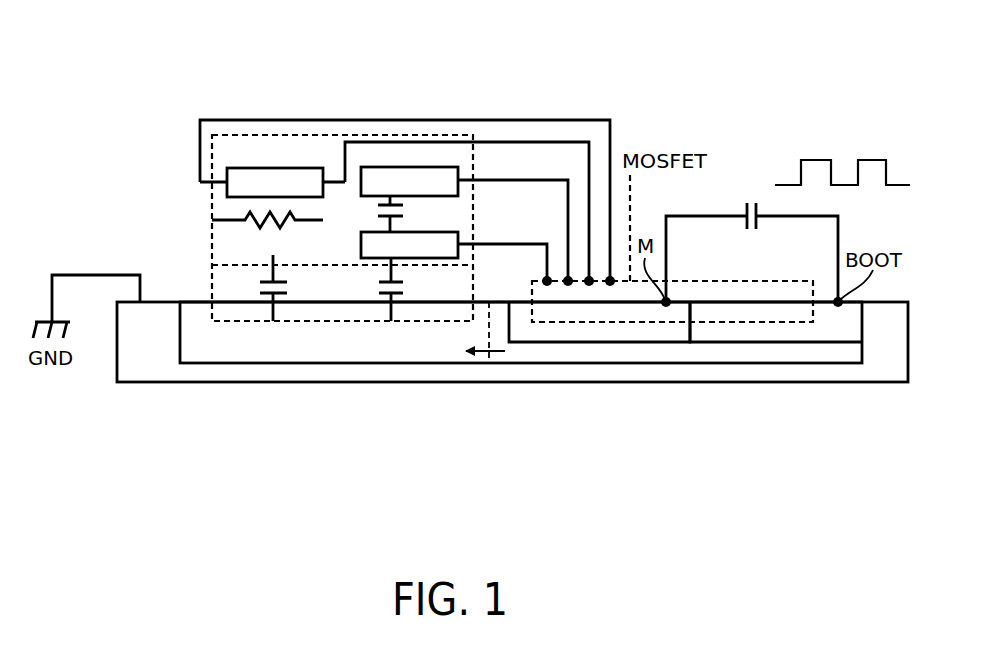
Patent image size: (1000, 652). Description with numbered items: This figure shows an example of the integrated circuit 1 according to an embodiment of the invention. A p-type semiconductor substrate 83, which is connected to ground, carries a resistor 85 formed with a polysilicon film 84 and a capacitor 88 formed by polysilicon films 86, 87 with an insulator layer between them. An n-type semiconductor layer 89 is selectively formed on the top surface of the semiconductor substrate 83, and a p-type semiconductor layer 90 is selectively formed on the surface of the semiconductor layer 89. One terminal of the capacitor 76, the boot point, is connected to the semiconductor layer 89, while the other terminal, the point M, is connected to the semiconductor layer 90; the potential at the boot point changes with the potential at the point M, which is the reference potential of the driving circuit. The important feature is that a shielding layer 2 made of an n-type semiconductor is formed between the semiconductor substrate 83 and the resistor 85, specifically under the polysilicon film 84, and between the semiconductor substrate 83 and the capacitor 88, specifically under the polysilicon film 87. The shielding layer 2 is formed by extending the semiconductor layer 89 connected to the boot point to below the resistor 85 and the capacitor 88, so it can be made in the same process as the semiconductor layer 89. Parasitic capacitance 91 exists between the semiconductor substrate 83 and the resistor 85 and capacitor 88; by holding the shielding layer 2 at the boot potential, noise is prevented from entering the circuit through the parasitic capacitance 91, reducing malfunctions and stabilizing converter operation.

The integrated circuit 1 is at (662, 80).
The shielding layer 2 is at (342, 355).
The capacitor 76 is at (743, 210).
The semiconductor substrate 83 is at (880, 372).
The polysilicon film 84 is at (272, 168).
The resistor 85 is at (290, 223).
The polysilicon film 86 is at (458, 172).
The polysilicon film 87 is at (458, 240).
The capacitor 88 is at (397, 203).
The semiconductor layer 89 is at (770, 355).
The semiconductor layer 90 is at (593, 335).
The parasitic capacitance 91 is at (287, 282).